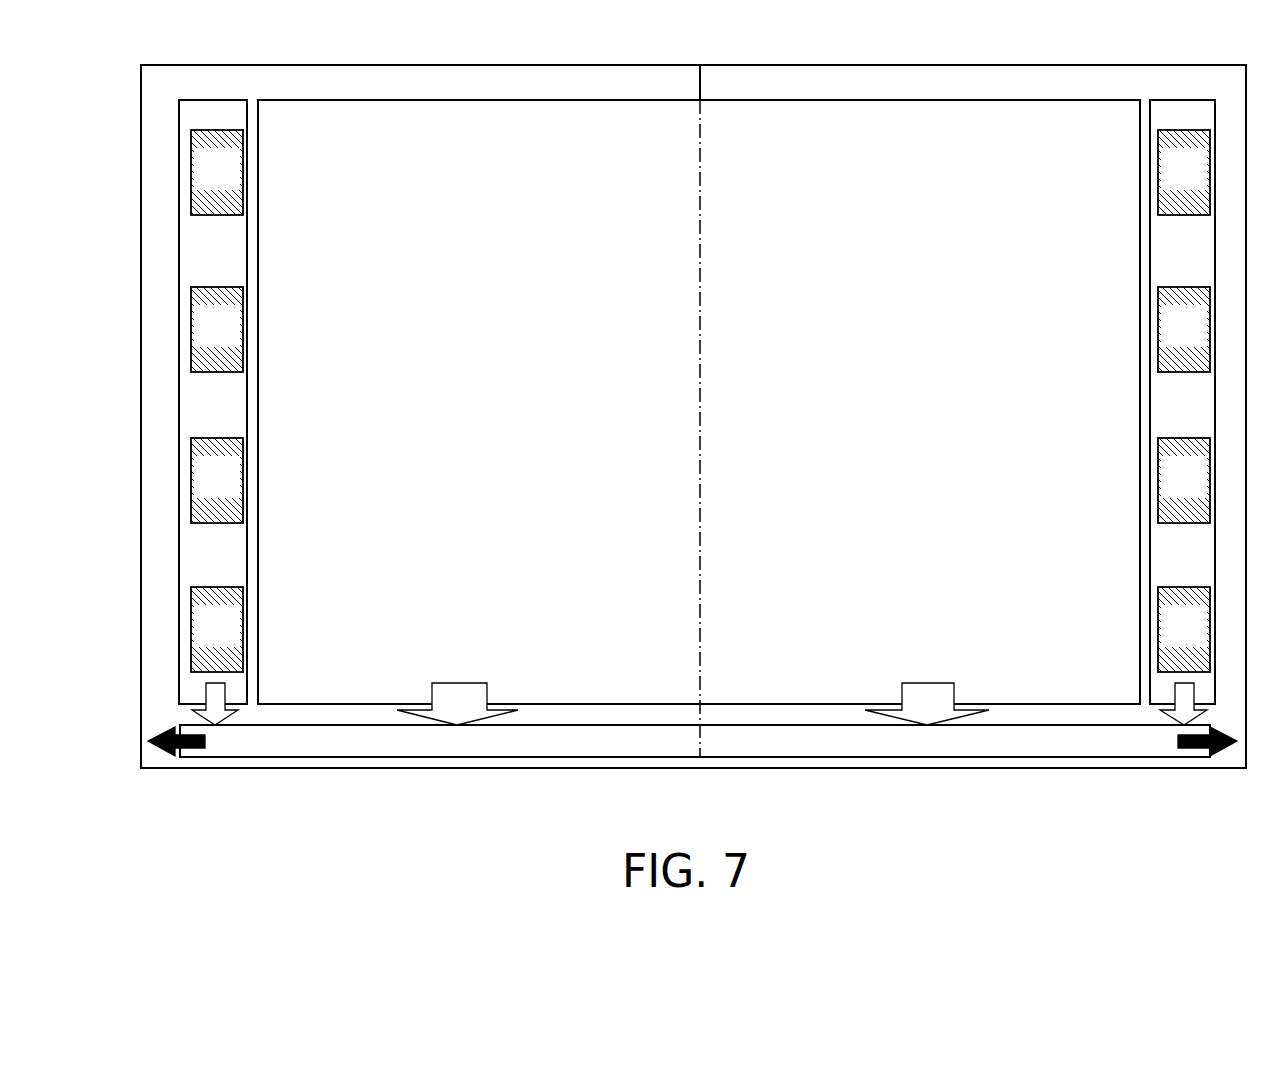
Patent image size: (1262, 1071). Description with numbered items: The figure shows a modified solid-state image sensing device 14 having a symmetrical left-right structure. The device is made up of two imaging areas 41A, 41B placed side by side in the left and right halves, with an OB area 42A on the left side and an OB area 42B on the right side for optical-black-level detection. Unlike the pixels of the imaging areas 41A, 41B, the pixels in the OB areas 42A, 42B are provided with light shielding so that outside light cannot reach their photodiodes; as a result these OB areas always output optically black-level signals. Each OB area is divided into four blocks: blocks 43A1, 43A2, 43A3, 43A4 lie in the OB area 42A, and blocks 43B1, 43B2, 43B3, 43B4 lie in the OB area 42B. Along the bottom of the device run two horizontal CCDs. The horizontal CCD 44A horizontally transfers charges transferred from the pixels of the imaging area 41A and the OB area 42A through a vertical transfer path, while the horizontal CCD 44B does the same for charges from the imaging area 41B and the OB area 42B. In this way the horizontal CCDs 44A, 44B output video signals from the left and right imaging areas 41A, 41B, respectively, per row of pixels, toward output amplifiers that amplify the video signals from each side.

The solid-state image sensing device 14 is at (822, 46).
The imaging area 41A is at (473, 110).
The imaging area 41B is at (968, 110).
The OB area 42A is at (227, 110).
The OB area 42B is at (1193, 110).
The block 43A1 is at (240, 143).
The block 43A2 is at (240, 300).
The block 43A3 is at (240, 451).
The block 43A4 is at (240, 600).
The block 43B1 is at (1160, 138).
The block 43B2 is at (1160, 295).
The block 43B3 is at (1160, 446).
The block 43B4 is at (1160, 595).
The horizontal CCD 44A is at (456, 758).
The horizontal CCD 44B is at (758, 758).